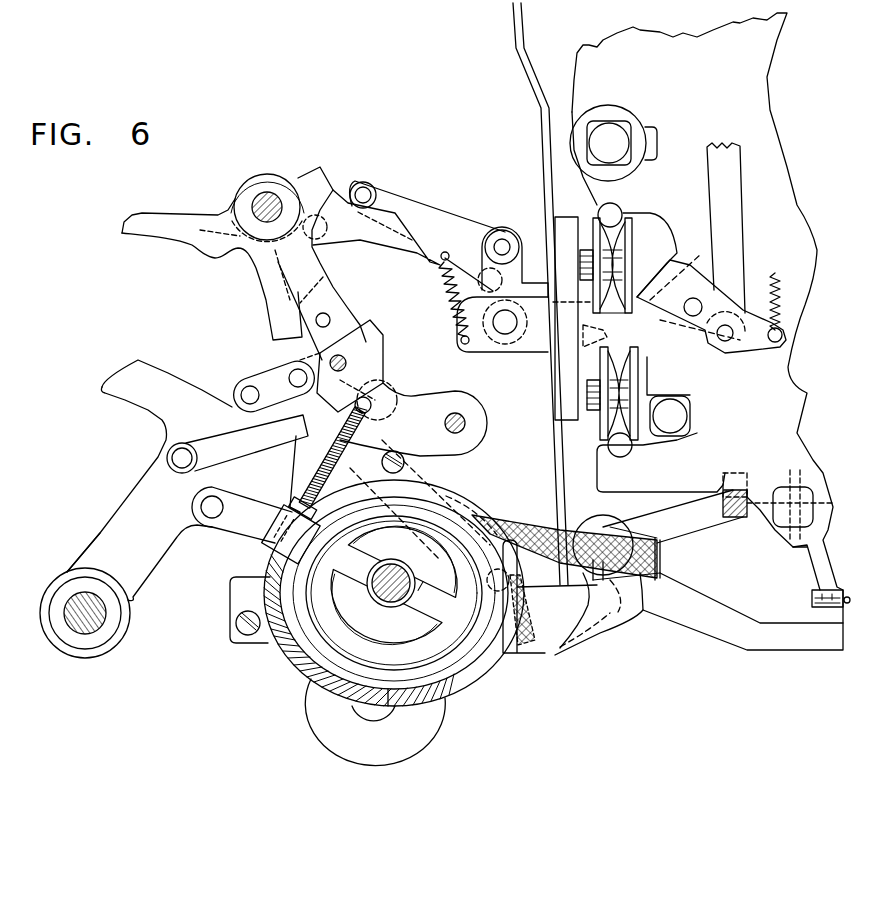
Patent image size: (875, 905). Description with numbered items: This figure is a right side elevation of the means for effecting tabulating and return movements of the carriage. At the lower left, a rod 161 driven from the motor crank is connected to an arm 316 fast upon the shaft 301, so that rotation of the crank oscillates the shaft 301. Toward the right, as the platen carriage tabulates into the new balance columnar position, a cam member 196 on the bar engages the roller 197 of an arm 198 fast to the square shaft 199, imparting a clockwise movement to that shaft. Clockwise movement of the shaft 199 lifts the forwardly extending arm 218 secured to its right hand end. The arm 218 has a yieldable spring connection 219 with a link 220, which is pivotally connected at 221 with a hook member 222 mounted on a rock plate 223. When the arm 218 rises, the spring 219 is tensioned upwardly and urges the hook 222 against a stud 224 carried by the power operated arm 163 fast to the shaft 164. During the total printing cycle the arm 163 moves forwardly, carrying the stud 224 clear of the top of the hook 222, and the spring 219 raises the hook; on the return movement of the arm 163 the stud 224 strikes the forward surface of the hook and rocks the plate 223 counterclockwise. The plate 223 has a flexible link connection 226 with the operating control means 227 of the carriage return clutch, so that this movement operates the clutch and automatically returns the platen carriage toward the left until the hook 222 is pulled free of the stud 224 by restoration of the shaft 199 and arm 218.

The rod 161 is at (243, 533).
The power operated arm 163 is at (290, 268).
The shaft 164 is at (276, 196).
The cam member 196 is at (731, 472).
The roller 197 is at (742, 513).
The arm 198 is at (717, 517).
The square shaft 199 is at (605, 528).
The forwardly extending arm 218 is at (612, 612).
The yieldable spring connection 219 is at (518, 650).
The link 220 is at (462, 500).
The pivotal connection 221 is at (287, 362).
The hook member 222 is at (350, 330).
The rock plate 223 is at (408, 398).
The stud 224 is at (330, 323).
The flexible link connection 226 is at (292, 487).
The operating control means 227 is at (322, 618).
The shaft 301 is at (95, 635).
The arm 316 is at (137, 600).